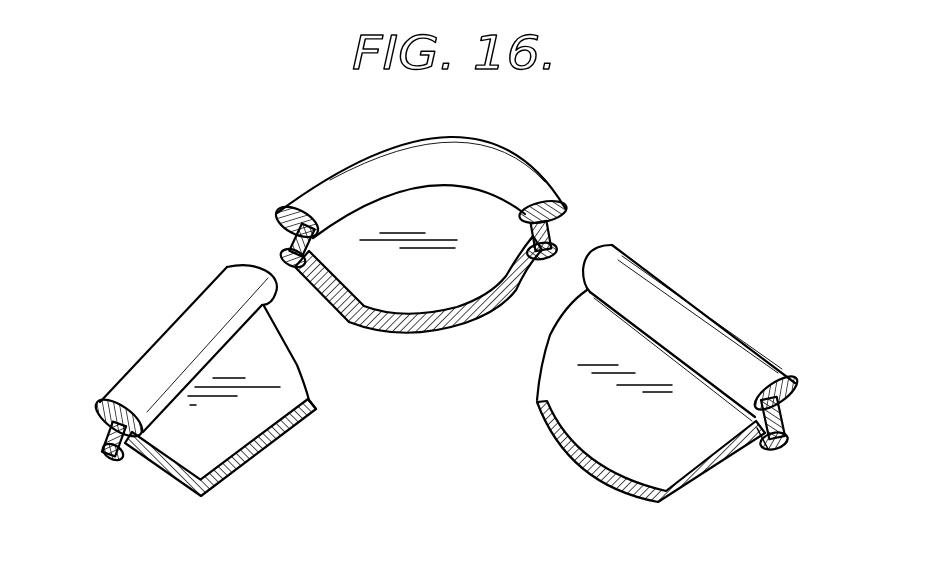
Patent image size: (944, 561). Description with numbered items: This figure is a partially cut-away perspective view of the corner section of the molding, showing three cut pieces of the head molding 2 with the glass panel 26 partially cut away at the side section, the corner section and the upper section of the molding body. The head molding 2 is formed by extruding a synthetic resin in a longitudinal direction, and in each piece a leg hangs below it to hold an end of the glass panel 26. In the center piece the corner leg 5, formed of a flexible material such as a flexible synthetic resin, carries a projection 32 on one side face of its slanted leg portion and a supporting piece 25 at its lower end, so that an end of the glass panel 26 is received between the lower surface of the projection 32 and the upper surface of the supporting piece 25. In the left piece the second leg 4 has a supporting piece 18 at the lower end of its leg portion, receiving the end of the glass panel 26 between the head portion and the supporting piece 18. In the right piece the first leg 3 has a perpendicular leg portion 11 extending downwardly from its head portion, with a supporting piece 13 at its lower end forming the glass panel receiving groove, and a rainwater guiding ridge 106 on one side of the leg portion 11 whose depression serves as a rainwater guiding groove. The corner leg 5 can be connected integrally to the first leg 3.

The head molding 2 is at (405, 167).
The glass panel 26 is at (421, 320).
The projection 32 is at (527, 207).
The corner leg 5 is at (555, 230).
The supporting piece 25 is at (531, 254).
The second leg 4 is at (106, 436).
The supporting piece 18 is at (125, 458).
The rainwater guiding ridge 106 is at (620, 312).
The first leg 3 is at (786, 418).
The leg portion 11 is at (788, 428).
The supporting piece 13 is at (765, 443).